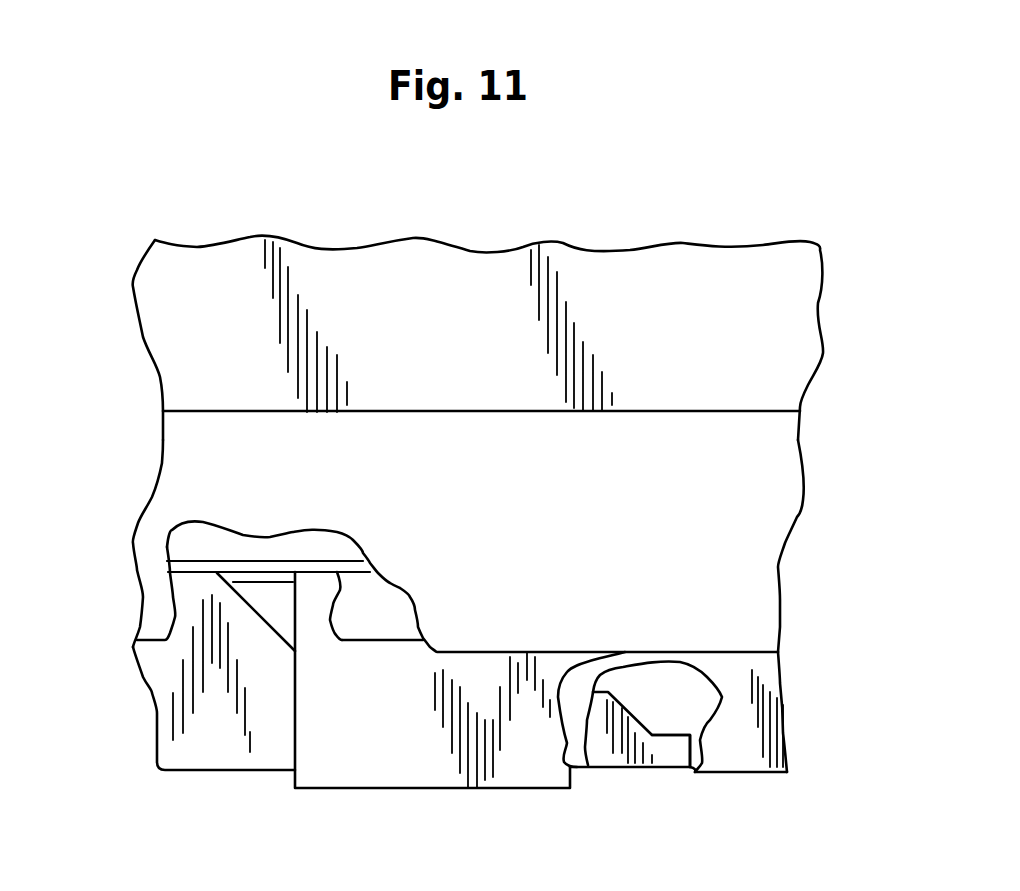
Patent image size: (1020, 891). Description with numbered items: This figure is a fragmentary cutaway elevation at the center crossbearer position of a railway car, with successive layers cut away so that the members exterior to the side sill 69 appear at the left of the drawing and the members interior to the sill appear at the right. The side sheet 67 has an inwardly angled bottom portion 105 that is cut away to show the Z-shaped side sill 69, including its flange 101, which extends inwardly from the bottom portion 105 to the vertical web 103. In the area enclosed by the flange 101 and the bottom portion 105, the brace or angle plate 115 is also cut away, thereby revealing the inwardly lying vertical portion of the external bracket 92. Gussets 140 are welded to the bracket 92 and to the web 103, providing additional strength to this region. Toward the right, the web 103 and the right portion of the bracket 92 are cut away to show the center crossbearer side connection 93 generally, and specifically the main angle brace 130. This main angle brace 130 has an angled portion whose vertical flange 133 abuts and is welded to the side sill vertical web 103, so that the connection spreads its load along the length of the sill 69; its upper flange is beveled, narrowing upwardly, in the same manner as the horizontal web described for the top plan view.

The side sheet 67 is at (798, 343).
The inwardly angled bottom portion 105 is at (757, 548).
The flange 101 is at (187, 563).
The gussets 140 is at (243, 593).
The vertical web 103 is at (158, 692).
The side sill 69 is at (210, 757).
The external bracket 92 is at (433, 780).
The brace or angle plate 115 is at (360, 628).
The vertical flange 133 is at (610, 753).
The main angle brace 130 is at (658, 743).
The center crossbearer side connection 93 is at (668, 762).